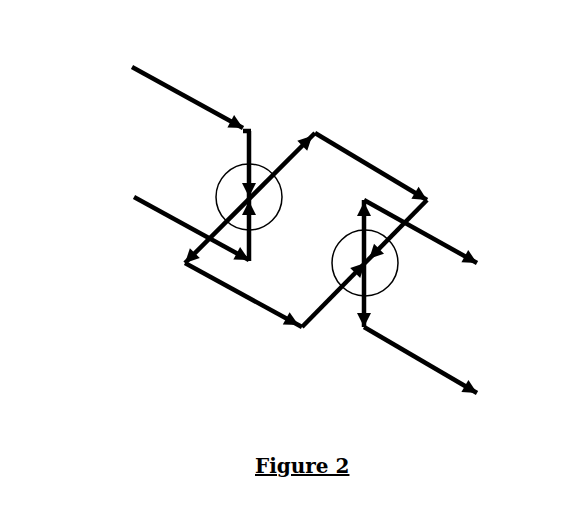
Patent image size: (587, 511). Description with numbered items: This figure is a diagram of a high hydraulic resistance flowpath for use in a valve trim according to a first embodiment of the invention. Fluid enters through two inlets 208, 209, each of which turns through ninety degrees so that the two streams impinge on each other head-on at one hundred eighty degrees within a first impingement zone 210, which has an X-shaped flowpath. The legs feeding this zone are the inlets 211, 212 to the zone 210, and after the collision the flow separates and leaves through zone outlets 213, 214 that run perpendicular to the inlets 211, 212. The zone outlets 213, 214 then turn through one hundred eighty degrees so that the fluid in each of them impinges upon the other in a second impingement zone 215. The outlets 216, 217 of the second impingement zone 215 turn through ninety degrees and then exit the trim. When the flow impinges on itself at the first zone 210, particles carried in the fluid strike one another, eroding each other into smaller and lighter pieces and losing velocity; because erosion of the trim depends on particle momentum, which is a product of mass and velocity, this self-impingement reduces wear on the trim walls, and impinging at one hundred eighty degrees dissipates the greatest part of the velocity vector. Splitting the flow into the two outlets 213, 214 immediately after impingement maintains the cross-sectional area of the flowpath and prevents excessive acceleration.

The inlet 208 is at (167, 78).
The inlet 209 is at (133, 197).
The first impingement zone 210 is at (287, 192).
The inlet to the zone 211 is at (247, 147).
The inlet to the zone 212 is at (255, 251).
The zone outlet 213 is at (213, 230).
The zone outlet 214 is at (282, 163).
The second impingement zone 215 is at (400, 282).
The outlet of the second impingement zone 216 is at (397, 213).
The outlet of the second impingement zone 217 is at (383, 357).